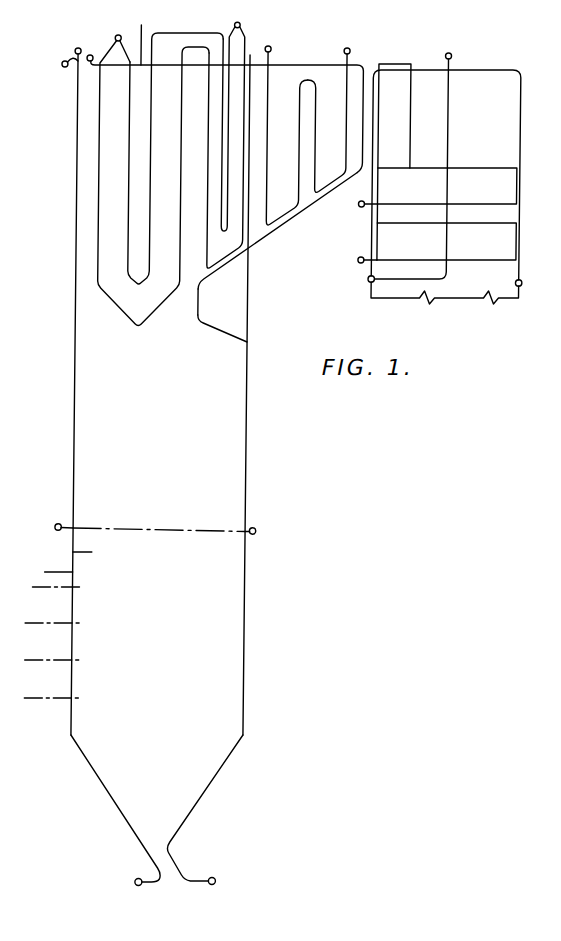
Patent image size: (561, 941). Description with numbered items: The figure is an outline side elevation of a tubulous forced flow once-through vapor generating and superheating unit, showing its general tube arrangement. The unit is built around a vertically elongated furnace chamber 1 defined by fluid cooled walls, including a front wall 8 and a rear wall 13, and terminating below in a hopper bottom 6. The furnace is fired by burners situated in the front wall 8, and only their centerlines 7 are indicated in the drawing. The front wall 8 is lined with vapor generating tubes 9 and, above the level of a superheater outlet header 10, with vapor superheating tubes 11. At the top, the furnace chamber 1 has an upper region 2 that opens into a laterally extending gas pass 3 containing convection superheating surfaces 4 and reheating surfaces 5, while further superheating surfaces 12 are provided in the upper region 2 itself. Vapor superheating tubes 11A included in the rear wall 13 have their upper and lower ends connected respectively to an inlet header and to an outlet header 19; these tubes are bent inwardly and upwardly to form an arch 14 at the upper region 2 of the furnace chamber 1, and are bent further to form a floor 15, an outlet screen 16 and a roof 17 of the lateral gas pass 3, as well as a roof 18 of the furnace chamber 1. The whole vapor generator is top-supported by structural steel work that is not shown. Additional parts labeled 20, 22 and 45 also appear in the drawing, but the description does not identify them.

The furnace chamber 1 is at (179, 394).
The upper region 2 is at (150, 219).
The lateral gas pass 3 is at (263, 160).
The convection superheating surfaces 4 is at (220, 170).
The reheating surfaces 5 is at (336, 140).
The hopper bottom 6 is at (174, 809).
The burner centerlines 7 is at (47, 660).
The front wall 8 is at (52, 568).
The vapor generating tubes 9 is at (87, 553).
The superheater outlet header 10 is at (60, 525).
The vapor superheating tubes 11 is at (78, 380).
The vapor superheating tubes 11A is at (229, 338).
The superheating surfaces 12 is at (120, 173).
The rear wall 13 is at (250, 555).
The arch 14 is at (200, 305).
The floor 15 is at (302, 215).
The outlet screen 16 is at (367, 110).
The roof 17 is at (305, 63).
The roof 18 is at (141, 33).
The outlet header 19 is at (92, 55).
The connecting pipe 20 is at (78, 48).
The outlet pipe 22 is at (144, 885).
The connecting pipe 45 is at (64, 67).